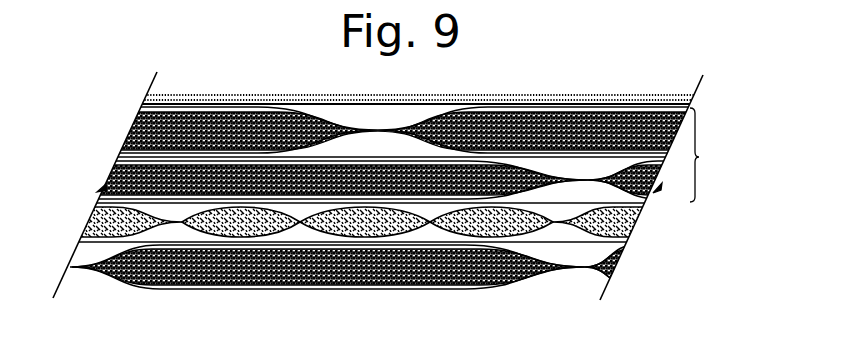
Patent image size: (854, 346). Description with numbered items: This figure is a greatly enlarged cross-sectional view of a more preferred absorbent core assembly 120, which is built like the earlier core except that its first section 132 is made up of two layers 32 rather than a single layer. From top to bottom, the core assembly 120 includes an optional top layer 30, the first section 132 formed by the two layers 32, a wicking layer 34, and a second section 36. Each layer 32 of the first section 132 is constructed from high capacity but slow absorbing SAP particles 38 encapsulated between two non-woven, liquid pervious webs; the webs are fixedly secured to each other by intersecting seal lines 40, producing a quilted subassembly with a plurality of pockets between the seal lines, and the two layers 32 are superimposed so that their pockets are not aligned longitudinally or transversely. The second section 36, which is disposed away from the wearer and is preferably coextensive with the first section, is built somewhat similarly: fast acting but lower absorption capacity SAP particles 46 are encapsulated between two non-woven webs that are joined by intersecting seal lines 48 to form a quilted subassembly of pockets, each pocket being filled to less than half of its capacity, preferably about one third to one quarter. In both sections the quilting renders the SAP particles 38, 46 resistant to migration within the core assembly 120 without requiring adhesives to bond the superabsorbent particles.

The core assembly 120 is at (397, 165).
The top layer 30 is at (243, 97).
The layer 32 is at (330, 160).
The high capacity, slow absorbing SAP particles 38 is at (300, 122).
The intersecting seal lines 40 is at (380, 128).
The first section 132 is at (699, 157).
The wicking layer 34 is at (641, 224).
The second section 36 is at (620, 267).
The fast acting but lower absorption capacity SAP particles 46 is at (288, 288).
The intersecting seal lines 48 is at (574, 278).